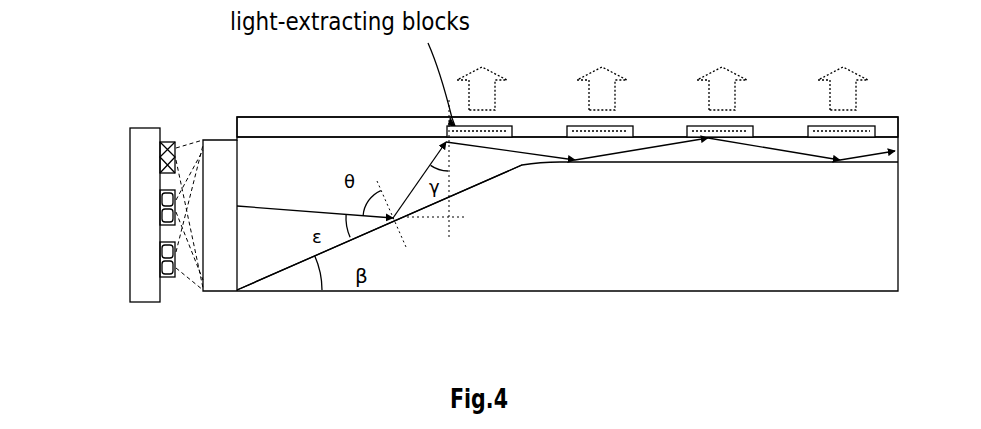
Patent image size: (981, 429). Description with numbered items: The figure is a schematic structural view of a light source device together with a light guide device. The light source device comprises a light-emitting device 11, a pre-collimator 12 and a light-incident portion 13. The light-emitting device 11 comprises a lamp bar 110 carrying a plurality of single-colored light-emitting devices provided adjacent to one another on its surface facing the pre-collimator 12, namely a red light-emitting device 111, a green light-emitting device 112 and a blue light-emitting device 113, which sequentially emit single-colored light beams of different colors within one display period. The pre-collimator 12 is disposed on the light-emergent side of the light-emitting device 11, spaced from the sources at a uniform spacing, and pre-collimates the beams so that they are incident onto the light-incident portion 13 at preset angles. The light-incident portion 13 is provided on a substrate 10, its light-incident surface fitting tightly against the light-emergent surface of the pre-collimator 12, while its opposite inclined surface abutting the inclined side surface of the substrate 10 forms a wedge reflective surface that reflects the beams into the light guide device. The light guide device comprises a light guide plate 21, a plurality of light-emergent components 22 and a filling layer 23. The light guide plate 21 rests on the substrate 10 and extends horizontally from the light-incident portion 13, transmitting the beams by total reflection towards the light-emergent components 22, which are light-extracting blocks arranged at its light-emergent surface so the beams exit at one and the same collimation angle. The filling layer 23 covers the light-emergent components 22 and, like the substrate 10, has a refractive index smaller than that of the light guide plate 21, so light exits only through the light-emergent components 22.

The substrate 10 is at (747, 252).
The light-emitting device 11 is at (137, 199).
The lamp bar 110 is at (145, 273).
The red light-emitting device 111 is at (158, 262).
The green light-emitting device 112 is at (158, 208).
The blue light-emitting device 113 is at (158, 152).
The pre-collimator 12 is at (228, 252).
The light-incident portion 13 is at (308, 152).
The light guide plate 21 is at (772, 147).
The light-emergent components 22 is at (615, 128).
The filling layer 23 is at (537, 128).